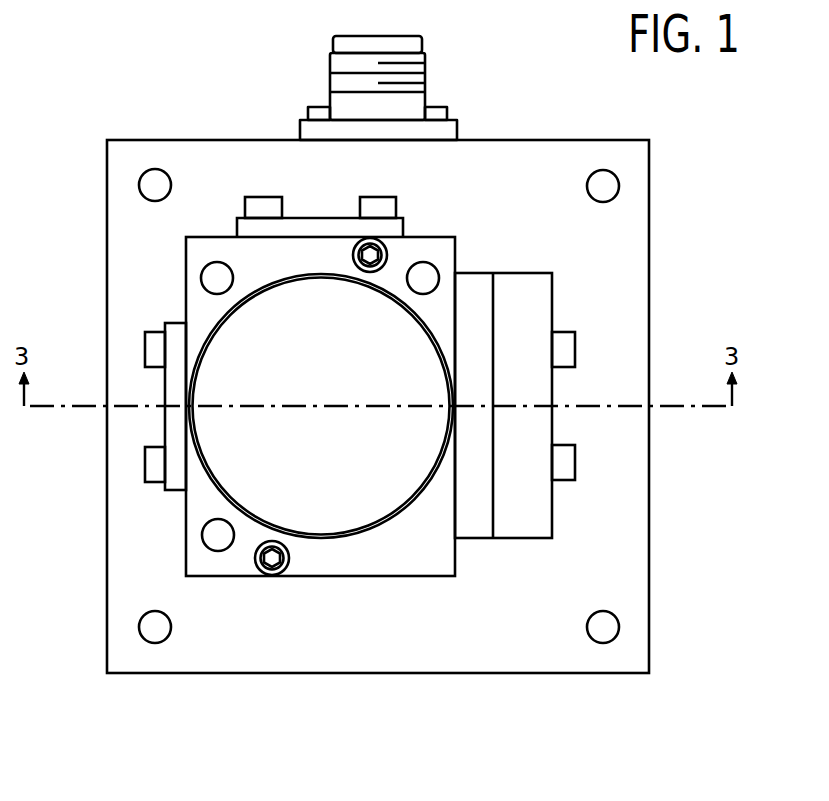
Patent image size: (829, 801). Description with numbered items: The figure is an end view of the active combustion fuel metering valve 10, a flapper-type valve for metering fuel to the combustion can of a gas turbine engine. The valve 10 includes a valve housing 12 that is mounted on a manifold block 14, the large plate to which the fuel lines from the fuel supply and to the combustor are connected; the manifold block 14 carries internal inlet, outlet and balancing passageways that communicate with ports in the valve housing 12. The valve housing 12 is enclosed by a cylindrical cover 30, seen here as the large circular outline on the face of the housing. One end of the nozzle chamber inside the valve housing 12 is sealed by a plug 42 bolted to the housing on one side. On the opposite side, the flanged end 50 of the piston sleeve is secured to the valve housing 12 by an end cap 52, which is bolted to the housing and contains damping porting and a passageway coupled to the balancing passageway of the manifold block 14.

The valve 10 is at (206, 76).
The valve housing 12 is at (387, 568).
The manifold block 14 is at (633, 557).
The cylindrical cover 30 is at (322, 540).
The plug 42 is at (177, 320).
The flanged end 50 is at (472, 283).
The end cap 52 is at (519, 531).